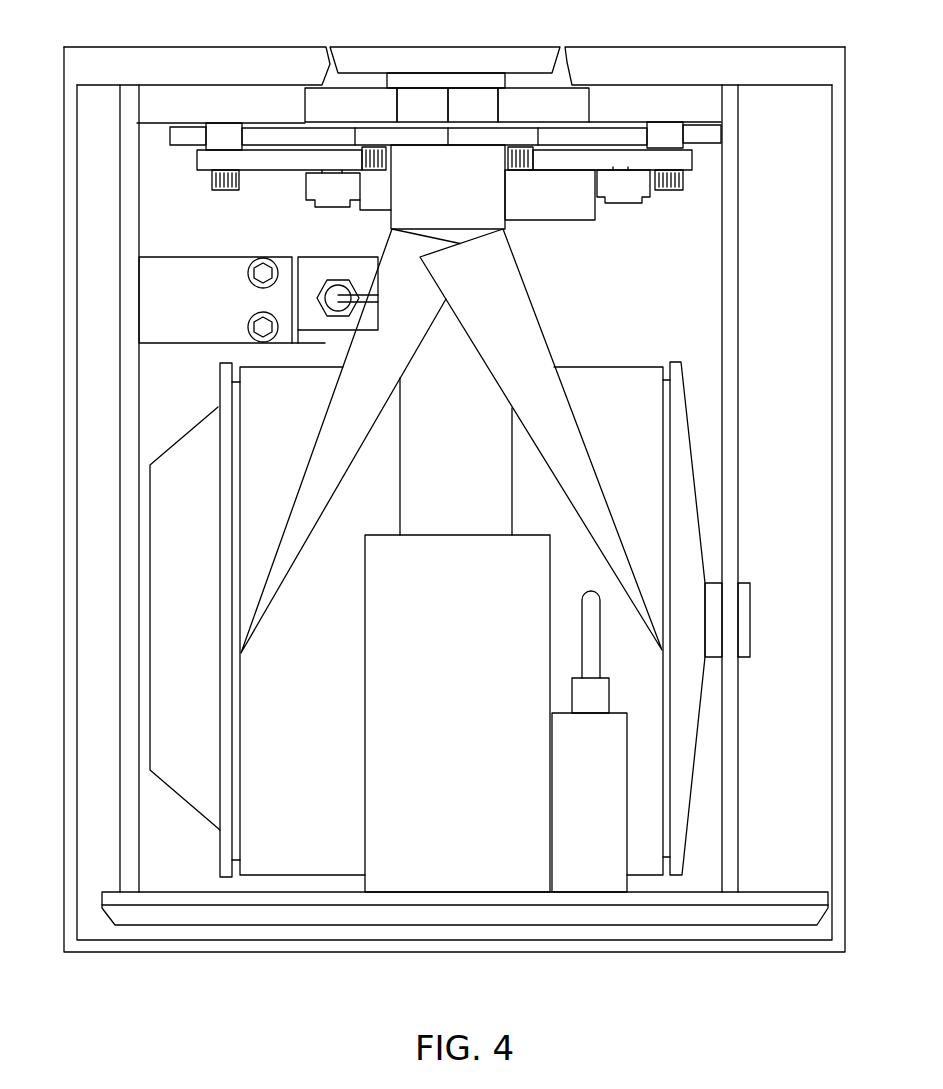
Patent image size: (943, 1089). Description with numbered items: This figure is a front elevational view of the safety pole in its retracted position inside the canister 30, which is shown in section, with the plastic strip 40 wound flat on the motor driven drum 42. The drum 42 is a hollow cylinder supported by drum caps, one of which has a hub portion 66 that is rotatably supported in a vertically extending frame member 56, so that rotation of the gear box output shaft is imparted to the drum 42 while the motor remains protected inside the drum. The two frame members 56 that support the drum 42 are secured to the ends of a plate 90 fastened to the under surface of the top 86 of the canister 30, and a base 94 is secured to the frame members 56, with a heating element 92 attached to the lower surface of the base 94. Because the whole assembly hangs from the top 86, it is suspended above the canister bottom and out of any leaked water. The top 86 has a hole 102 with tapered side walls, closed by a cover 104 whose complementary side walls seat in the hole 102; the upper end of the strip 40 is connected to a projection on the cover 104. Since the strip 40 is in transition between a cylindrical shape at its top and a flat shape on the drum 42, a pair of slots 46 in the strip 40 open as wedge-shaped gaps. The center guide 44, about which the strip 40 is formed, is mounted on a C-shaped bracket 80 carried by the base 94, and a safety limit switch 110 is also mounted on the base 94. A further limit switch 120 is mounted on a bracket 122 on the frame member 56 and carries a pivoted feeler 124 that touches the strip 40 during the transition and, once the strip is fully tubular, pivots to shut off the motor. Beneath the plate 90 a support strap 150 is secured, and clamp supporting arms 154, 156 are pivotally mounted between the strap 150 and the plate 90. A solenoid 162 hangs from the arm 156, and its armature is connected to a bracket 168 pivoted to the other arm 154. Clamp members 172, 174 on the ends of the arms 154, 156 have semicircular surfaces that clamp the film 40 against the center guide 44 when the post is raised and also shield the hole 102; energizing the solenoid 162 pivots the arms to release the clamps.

The canister 30 is at (837, 398).
The plastic strip 40 is at (526, 310).
The drum 42 is at (671, 388).
The center guide 44 is at (503, 495).
The slots 46 is at (482, 243).
The frame member 56 is at (125, 450).
The hub portion 66 is at (745, 603).
The C-shaped bracket 80 is at (368, 760).
The top 86 is at (695, 52).
The plate 90 is at (213, 98).
The heating element 92 is at (782, 918).
The base 94 is at (798, 895).
The hole 102 is at (562, 60).
The cover 104 is at (414, 58).
The safety limit switch 110 is at (585, 878).
The limit switch 120 is at (318, 268).
The bracket 122 is at (200, 262).
The pivoted feeler 124 is at (347, 298).
The support strap 150 is at (254, 160).
The clamp supporting arm 154 is at (712, 133).
The clamp supporting arm 156 is at (182, 137).
The solenoid 162 is at (588, 210).
The bracket 168 is at (371, 200).
The clamp member 172 is at (580, 101).
The clamp member 174 is at (318, 107).